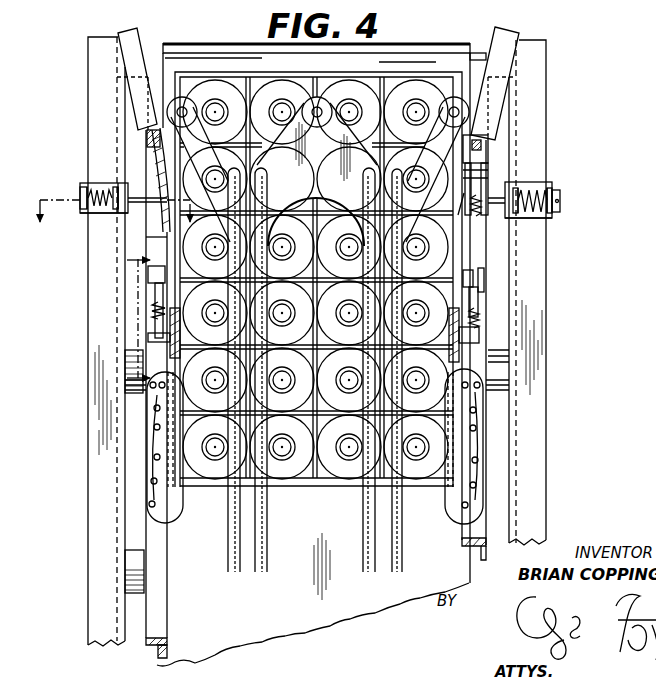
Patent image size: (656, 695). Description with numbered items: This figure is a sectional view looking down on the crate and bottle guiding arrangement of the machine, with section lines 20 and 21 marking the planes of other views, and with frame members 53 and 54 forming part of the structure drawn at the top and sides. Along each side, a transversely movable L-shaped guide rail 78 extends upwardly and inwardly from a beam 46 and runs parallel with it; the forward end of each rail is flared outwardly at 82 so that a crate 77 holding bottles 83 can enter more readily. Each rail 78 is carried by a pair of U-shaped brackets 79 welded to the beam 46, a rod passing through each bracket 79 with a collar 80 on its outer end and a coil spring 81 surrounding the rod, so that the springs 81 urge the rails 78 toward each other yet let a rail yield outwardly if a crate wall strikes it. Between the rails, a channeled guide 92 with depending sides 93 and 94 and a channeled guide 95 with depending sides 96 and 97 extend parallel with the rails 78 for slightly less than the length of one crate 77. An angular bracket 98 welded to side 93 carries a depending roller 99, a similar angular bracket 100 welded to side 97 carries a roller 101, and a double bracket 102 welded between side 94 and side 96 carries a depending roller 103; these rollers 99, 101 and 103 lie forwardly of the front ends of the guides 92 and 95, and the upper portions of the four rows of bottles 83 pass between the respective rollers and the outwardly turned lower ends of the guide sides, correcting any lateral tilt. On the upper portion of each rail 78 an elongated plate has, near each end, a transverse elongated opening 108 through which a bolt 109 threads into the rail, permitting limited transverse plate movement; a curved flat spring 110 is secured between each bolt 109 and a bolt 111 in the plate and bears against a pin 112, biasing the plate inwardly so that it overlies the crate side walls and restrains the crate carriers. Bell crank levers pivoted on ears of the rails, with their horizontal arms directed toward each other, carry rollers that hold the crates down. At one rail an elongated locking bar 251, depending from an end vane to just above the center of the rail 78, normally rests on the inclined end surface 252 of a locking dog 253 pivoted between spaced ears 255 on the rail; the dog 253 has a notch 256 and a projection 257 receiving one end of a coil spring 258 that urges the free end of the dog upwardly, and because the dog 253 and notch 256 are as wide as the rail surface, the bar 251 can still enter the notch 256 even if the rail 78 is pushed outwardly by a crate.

The section line 20- 20 is at (116, 225).
The section line 21- 21 is at (146, 311).
The beam 46 is at (95, 110).
The frame member 53 is at (447, 43).
The frame cross member 54 is at (478, 52).
The crate 77 is at (331, 489).
The guide rail 78 is at (152, 238).
The U-shaped bracket 79 is at (88, 183).
The collar 80 is at (80, 195).
The coil spring 81 is at (105, 205).
The flared end portion 82 is at (142, 32).
The bottle 83 is at (302, 262).
The channeled guide 92 is at (271, 541).
The depending side 93 is at (231, 562).
The depending side 94 is at (258, 575).
The channeled guide 95 is at (357, 524).
The depending side 96 is at (368, 567).
The depending side 97 is at (403, 553).
The angular bracket 98 is at (205, 158).
The roller 99 is at (181, 97).
The angular bracket 100 is at (494, 142).
The roller 101 is at (463, 104).
The double bracket 102 is at (303, 104).
The roller 103 is at (318, 98).
The transverse elongated opening 108 is at (163, 383).
The bolt 109 is at (148, 386).
The flat spring 110 is at (156, 401).
The bolt 111 is at (162, 431).
The pin 112 is at (162, 409).
The locking bar 251 is at (525, 182).
The inclined end surface 252 is at (483, 136).
The locking dog 253 is at (440, 112).
The ear 255 is at (488, 208).
The notch 256 is at (486, 163).
The projection 257 is at (465, 195).
The coil spring 258 is at (440, 188).